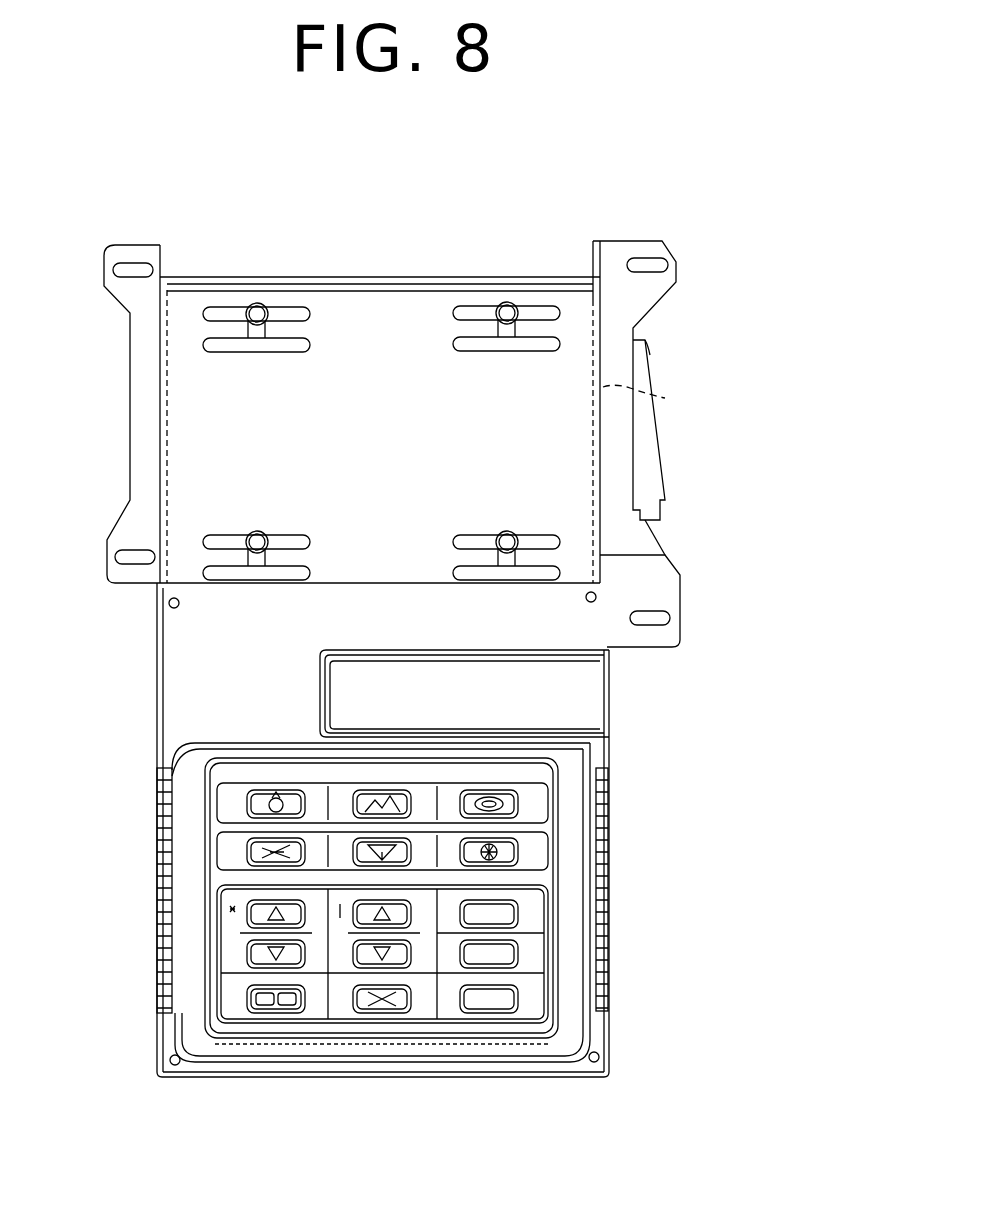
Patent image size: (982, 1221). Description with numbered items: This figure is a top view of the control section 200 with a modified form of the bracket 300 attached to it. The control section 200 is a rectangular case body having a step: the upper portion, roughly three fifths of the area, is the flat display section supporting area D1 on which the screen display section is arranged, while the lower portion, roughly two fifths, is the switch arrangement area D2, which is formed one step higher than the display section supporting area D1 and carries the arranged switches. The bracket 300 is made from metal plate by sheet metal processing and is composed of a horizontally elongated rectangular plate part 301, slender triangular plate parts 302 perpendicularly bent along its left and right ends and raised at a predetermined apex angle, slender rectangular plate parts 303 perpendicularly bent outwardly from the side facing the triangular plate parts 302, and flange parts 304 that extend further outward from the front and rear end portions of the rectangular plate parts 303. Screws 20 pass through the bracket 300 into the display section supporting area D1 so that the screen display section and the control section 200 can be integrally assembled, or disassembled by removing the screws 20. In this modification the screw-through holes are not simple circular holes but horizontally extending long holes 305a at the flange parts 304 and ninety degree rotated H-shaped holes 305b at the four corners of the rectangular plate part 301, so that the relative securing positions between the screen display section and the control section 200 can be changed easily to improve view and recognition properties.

The screw 20 is at (257, 312).
The control section 200 is at (620, 717).
The bracket 300 is at (739, 430).
The rectangular plate part 301 is at (403, 466).
The triangular plate part 302 is at (665, 398).
The rectangular plate part 303 is at (625, 442).
The flange part 304 is at (655, 305).
The long hole 305a is at (133, 270).
The 90 degree rotated H-shaped hole 305b is at (213, 318).
The display section supporting area D1 is at (270, 680).
The switch arrangement area D2 is at (190, 1005).